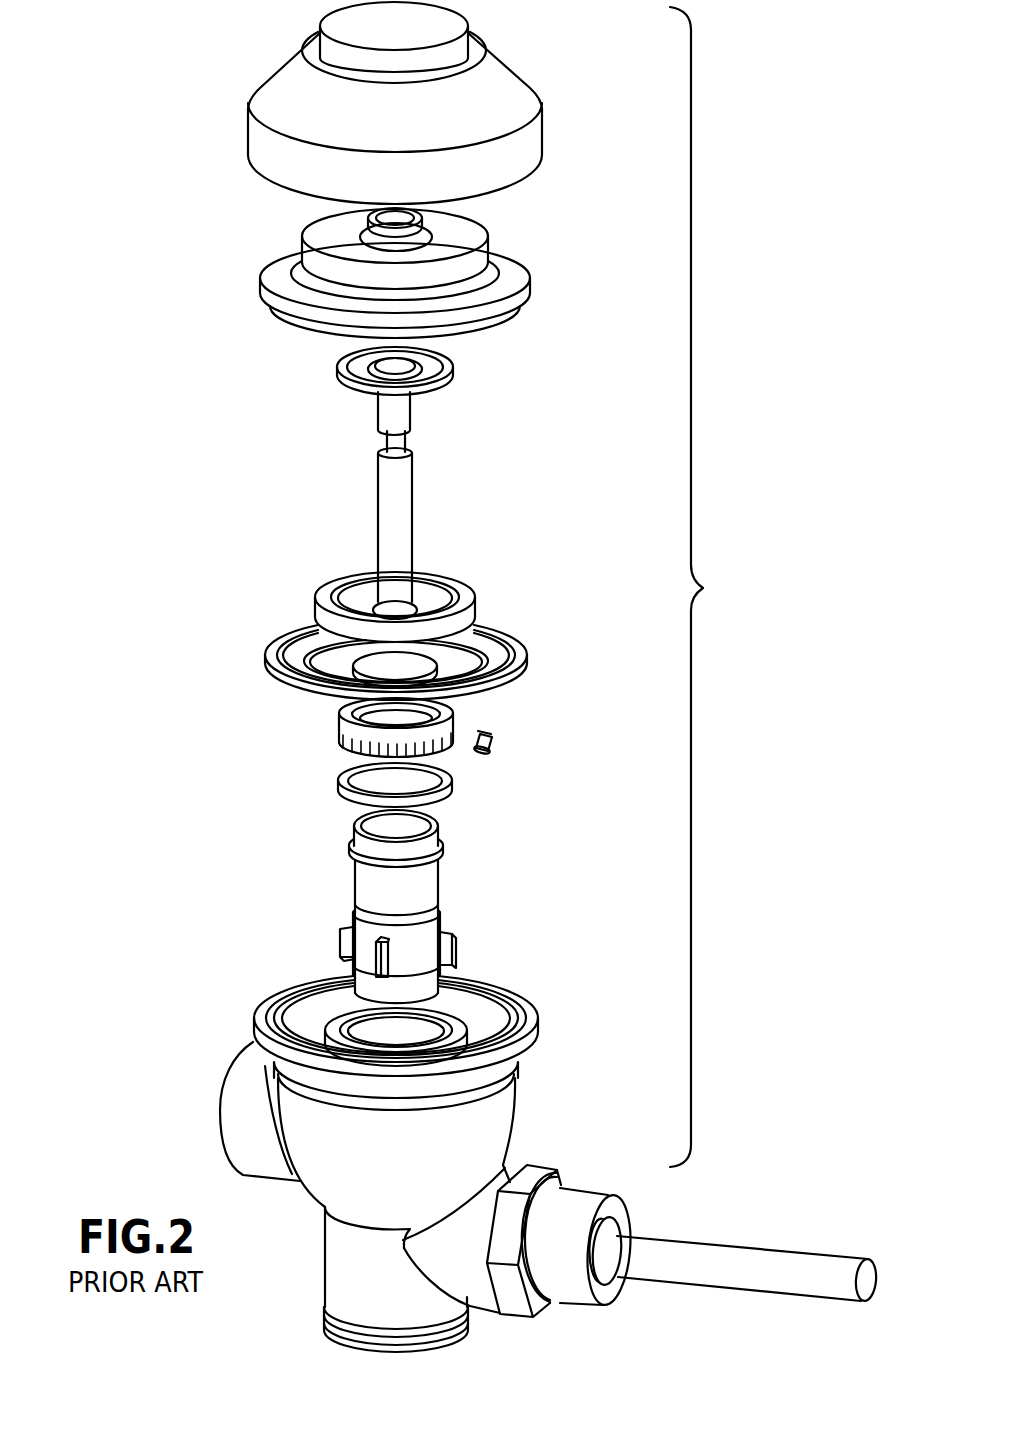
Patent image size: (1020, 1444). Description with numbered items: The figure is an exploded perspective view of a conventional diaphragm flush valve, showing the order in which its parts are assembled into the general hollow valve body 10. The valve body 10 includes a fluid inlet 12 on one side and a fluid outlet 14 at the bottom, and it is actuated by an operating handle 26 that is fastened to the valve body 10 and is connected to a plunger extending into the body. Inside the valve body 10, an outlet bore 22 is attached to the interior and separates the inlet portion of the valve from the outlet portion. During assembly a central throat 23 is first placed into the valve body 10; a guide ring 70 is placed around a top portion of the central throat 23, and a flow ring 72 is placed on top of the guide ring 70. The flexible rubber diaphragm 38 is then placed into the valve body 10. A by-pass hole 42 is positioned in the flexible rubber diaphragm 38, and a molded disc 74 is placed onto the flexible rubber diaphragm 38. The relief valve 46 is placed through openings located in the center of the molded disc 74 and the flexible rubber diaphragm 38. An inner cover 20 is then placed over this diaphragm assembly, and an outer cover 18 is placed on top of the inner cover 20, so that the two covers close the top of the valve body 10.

The valve body 10 is at (399, 1162).
The fluid inlet 12 is at (226, 1100).
The fluid outlet 14 is at (323, 1336).
The outer cover 18 is at (520, 74).
The inner cover 20 is at (528, 285).
The outlet bore 22 is at (318, 1030).
The central throat 23 is at (439, 897).
The operating handle 26 is at (769, 1246).
The flexible rubber diaphragm 38 is at (528, 650).
The by-pass hole 42 is at (500, 741).
The relief valve 46 is at (409, 516).
The guide ring 70 is at (456, 792).
The flow ring 72 is at (456, 722).
The molded disc 74 is at (470, 603).